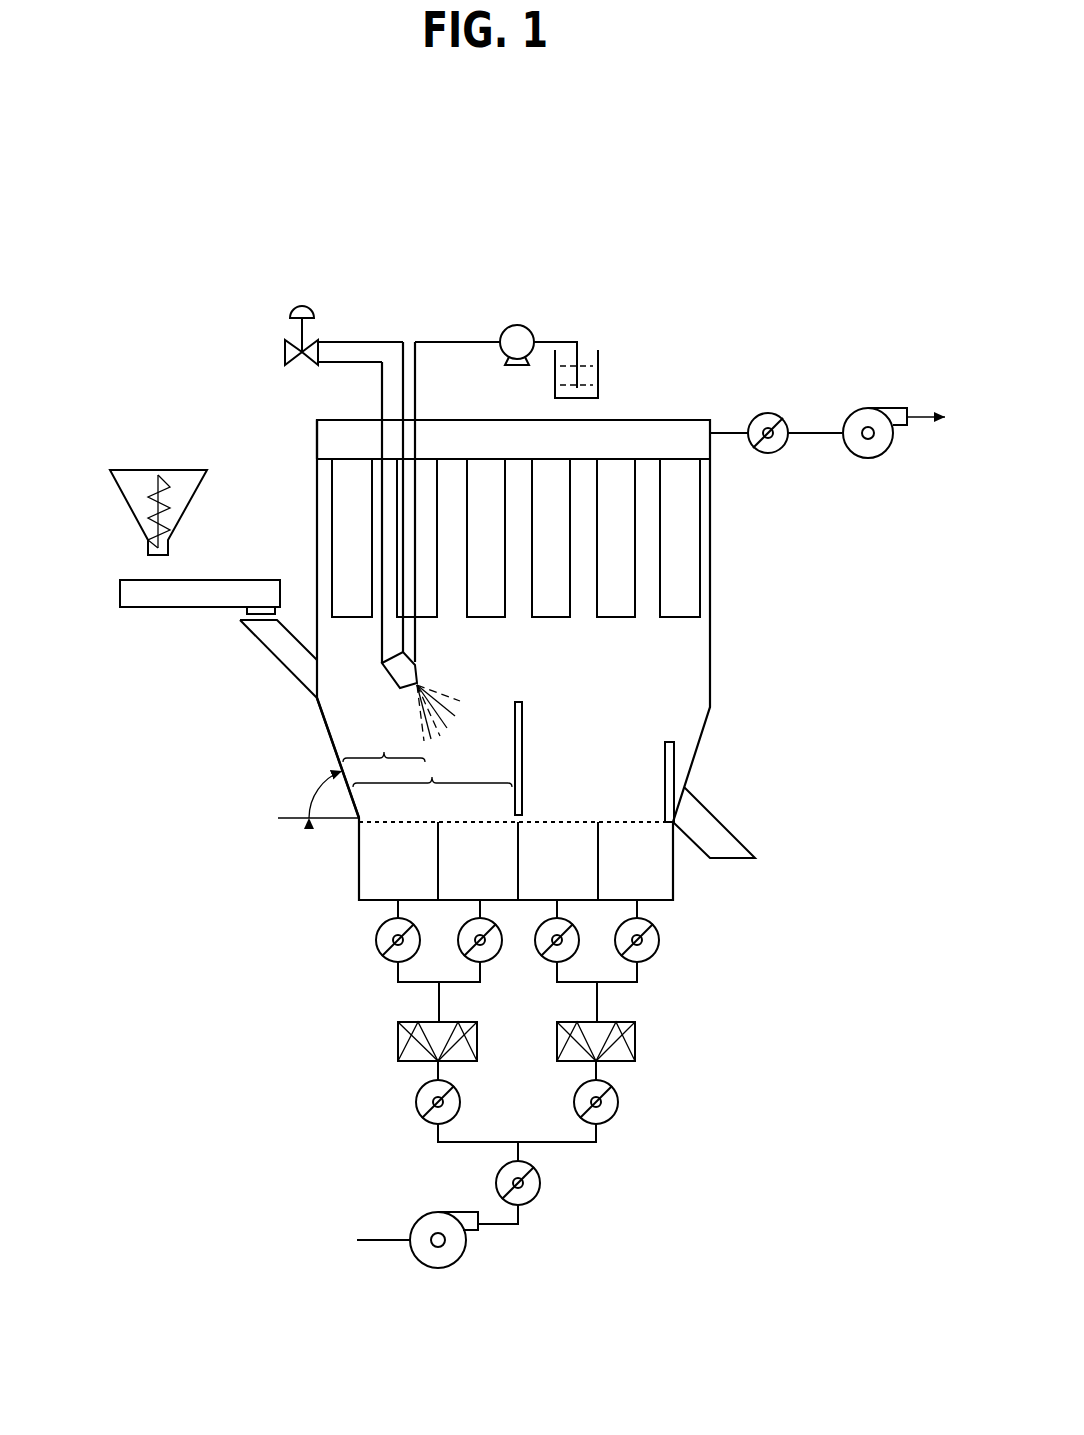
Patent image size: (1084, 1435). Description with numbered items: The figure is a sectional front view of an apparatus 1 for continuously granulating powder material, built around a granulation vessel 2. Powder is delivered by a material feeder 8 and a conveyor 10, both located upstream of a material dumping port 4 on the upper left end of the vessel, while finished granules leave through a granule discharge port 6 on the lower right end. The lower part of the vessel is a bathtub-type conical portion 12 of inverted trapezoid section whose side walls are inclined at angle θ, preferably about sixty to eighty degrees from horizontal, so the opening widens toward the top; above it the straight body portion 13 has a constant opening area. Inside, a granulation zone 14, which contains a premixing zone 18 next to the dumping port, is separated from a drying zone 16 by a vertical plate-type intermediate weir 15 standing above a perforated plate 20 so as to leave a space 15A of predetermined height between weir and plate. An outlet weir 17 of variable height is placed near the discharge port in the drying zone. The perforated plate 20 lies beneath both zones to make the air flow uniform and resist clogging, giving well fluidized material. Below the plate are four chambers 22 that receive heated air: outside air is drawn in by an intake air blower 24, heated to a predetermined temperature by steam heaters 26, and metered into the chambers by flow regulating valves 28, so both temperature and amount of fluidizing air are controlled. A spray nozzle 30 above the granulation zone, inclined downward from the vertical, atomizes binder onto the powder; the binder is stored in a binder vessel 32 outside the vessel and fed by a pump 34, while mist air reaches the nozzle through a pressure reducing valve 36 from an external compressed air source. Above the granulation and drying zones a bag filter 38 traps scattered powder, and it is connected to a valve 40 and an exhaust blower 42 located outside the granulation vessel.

The apparatus for continuously granulating powder material 1 is at (657, 305).
The granulation vessel 2 is at (718, 690).
The material dumping port 4 is at (290, 660).
The granule discharge port 6 is at (730, 842).
The material feeder 8 is at (188, 510).
The conveyor 10 is at (183, 597).
The conical portion 12 is at (330, 742).
The straight body portion 13 is at (710, 548).
The granulation zone 14 is at (435, 780).
The intermediate weir 15 is at (523, 725).
The space 15A is at (524, 815).
The drying zone 16 is at (613, 755).
The outlet weir 17 is at (675, 768).
The premixing zone 18 is at (384, 738).
The perforated plate 20 is at (405, 823).
The chambers 22 is at (407, 880).
The intake air blower 24 is at (438, 1268).
The steam heaters 26 is at (397, 1035).
The flow regulating valves 28 is at (378, 950).
The spray nozzle 30 is at (410, 672).
The binder vessel 32 is at (598, 383).
The pump 34 is at (517, 323).
The pressure reducing valve 36 is at (310, 305).
The bag filter 38 is at (692, 595).
The valve 40 is at (775, 413).
The exhaust blower 42 is at (887, 407).